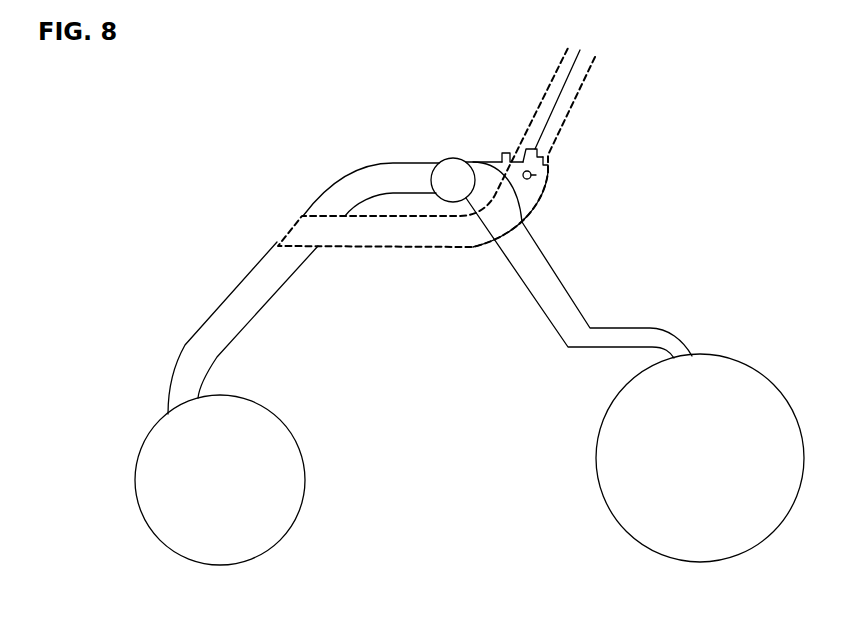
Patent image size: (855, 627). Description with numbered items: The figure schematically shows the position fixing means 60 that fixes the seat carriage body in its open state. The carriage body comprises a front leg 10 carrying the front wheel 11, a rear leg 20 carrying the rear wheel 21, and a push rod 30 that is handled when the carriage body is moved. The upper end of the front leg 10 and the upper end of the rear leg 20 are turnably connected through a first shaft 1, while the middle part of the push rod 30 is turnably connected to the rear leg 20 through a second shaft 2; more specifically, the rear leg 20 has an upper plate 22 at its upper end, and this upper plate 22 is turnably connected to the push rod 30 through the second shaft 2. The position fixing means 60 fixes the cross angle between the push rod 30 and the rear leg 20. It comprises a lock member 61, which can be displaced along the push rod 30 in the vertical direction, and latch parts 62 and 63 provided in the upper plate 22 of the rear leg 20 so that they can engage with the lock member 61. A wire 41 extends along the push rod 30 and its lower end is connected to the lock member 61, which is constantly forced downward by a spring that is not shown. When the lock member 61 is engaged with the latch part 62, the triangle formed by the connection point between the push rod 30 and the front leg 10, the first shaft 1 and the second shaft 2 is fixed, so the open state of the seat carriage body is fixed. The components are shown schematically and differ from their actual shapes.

The first shaft 1 is at (453, 172).
The second shaft 2 is at (543, 182).
The front leg 10 is at (243, 302).
The front wheel 11 is at (305, 477).
The rear leg 20 is at (545, 278).
The rear wheel 21 is at (595, 460).
The upper plate 22 is at (523, 193).
The push rod 30 is at (590, 72).
The wire 41 is at (560, 93).
The position fixing means 60 is at (563, 147).
The lock member 61 is at (543, 150).
The latch part 62 is at (545, 164).
The latch part 63 is at (507, 152).